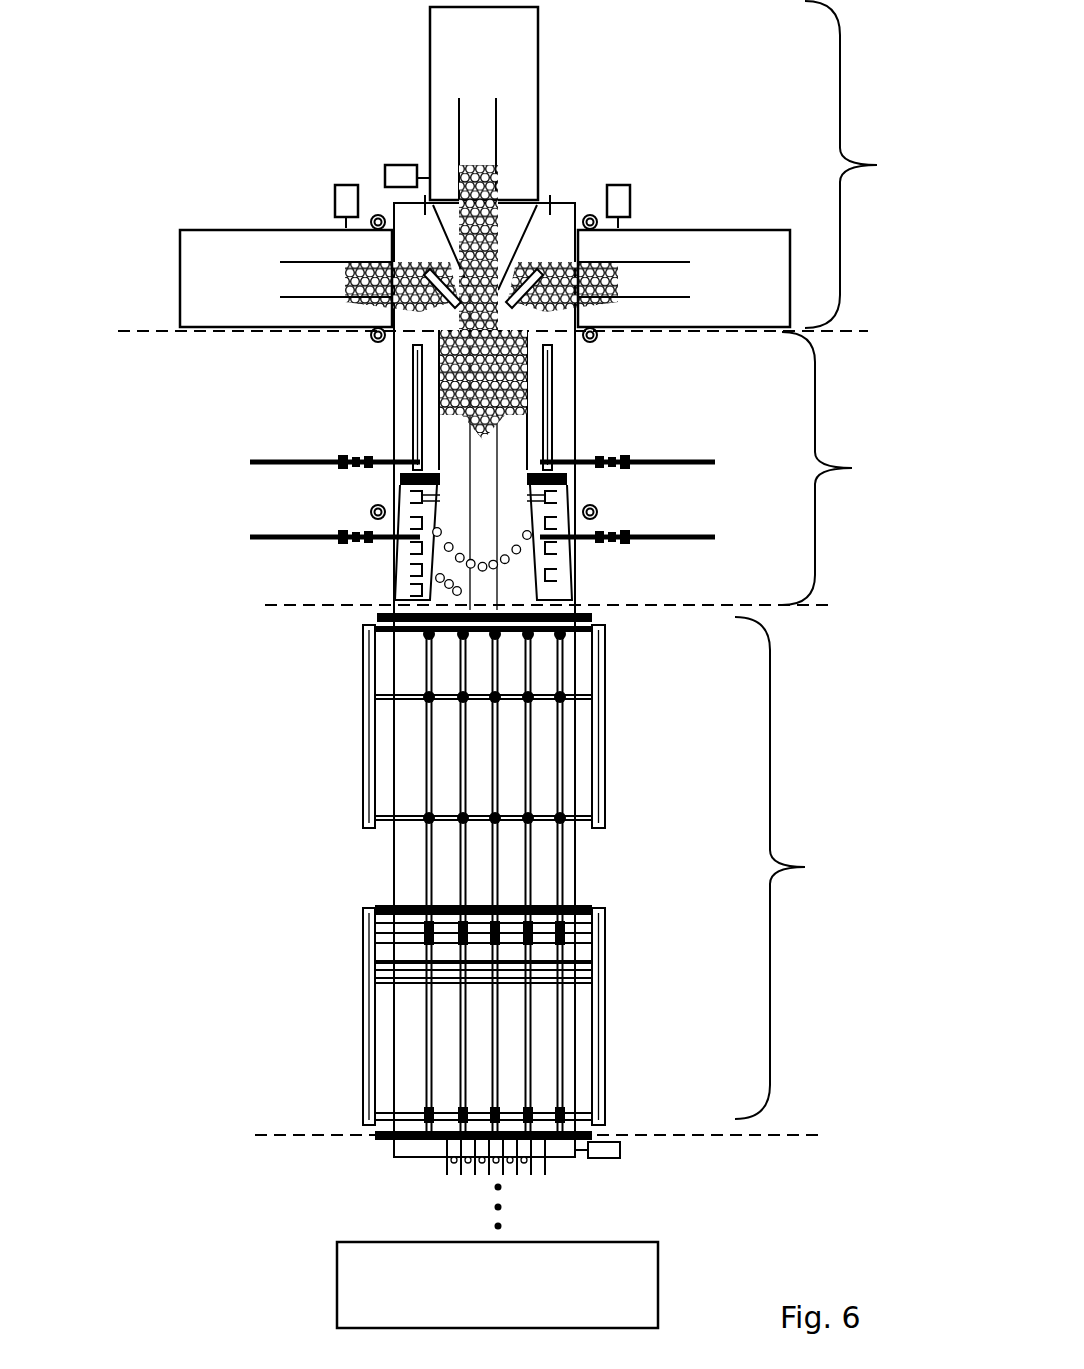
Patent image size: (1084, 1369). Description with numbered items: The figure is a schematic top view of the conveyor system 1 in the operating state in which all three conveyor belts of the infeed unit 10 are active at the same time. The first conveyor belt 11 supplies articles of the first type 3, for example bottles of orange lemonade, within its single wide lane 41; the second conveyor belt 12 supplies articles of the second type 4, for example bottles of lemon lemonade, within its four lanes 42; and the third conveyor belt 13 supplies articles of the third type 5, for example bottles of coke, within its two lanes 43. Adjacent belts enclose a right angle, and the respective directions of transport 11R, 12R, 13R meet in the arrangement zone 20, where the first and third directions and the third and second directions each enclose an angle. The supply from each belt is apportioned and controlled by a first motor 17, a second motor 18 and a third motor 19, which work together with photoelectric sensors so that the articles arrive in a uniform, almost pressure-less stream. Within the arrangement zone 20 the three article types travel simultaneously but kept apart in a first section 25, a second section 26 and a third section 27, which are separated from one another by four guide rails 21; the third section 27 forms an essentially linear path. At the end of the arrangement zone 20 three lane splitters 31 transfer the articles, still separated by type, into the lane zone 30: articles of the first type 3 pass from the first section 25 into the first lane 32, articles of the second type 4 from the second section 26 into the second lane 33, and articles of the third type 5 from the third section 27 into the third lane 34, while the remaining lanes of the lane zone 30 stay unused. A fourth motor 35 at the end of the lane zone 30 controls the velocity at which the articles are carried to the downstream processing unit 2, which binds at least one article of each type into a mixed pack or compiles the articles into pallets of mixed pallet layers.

The conveyor system 1 is at (118, 541).
The downstream processing unit 2 is at (337, 1272).
The articles of the first type 3 is at (345, 288).
The articles of the second type 4 is at (600, 282).
The articles of the third type 5 is at (497, 178).
The infeed unit 10 is at (845, 205).
The first conveyor belt 11 is at (200, 333).
The direction of transport of the first conveyor belt 11R is at (398, 330).
The second conveyor belt 12 is at (735, 226).
The direction of transport of the second conveyor belt 12R is at (535, 318).
The third conveyor belt 13 is at (548, 46).
The direction of transport of the third conveyor belt 13R is at (400, 232).
The first motor 17 is at (337, 200).
The second motor 18 is at (630, 200).
The third motor 19 is at (400, 165).
The arrangement zone 20 is at (825, 432).
The guide rails 21 is at (532, 258).
The first section 25 is at (453, 498).
The second section 26 is at (517, 498).
The third section 27 is at (483, 500).
The lane zone 30 is at (577, 921).
The lane splitters 31 is at (530, 595).
The first lane 32 is at (450, 730).
The second lane 33 is at (513, 767).
The third lane 34 is at (480, 733).
The fourth motor 35 is at (605, 1145).
The lane of the first conveyor belt 41 is at (285, 283).
The lanes of the second conveyor belt 42 is at (660, 285).
The lanes of the third conveyor belt 43 is at (481, 112).